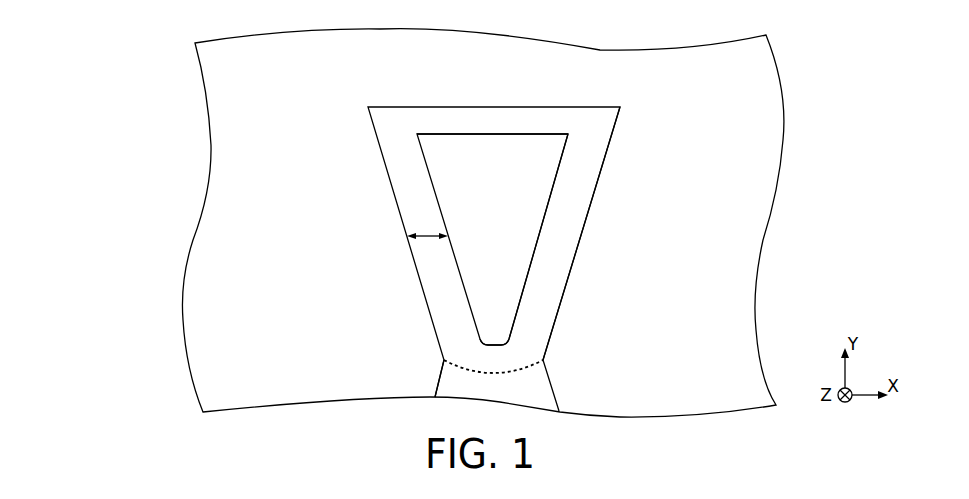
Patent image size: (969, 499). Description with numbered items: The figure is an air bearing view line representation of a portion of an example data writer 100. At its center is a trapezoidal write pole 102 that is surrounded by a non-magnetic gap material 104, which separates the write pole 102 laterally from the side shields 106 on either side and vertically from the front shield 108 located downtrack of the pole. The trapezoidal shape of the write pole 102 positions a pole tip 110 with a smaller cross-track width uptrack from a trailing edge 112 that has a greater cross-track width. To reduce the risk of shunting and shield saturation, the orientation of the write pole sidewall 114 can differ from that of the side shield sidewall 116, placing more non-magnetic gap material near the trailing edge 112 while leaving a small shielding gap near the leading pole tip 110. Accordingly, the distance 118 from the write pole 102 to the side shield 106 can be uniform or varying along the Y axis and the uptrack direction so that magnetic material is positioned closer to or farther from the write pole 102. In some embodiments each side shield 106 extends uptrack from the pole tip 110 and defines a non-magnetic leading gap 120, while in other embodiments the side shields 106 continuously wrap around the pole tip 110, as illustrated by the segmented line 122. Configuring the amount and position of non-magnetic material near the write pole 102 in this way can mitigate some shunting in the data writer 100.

The data writer 100 is at (136, 30).
The write pole 102 is at (477, 252).
The non-magnetic gap material 104 is at (380, 146).
The side shields 106 is at (209, 399).
The front shield 108 is at (207, 66).
The pole tip 110 is at (518, 350).
The trailing edge 112 is at (487, 135).
The write pole sidewall 114 is at (549, 193).
The side shield sidewall 116 is at (605, 155).
The distance 118 is at (428, 239).
The non-magnetic leading gap 120 is at (434, 376).
The segmented line 122 is at (510, 375).